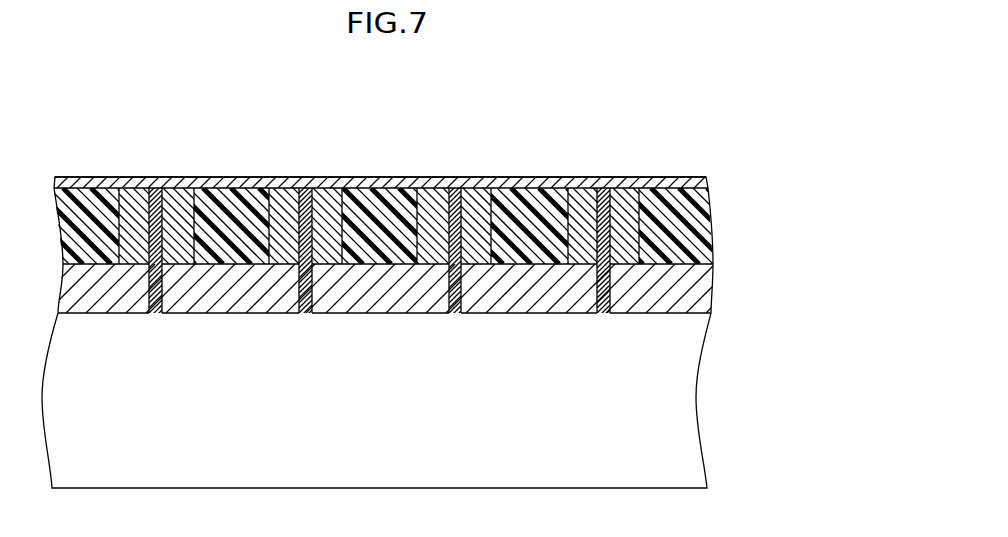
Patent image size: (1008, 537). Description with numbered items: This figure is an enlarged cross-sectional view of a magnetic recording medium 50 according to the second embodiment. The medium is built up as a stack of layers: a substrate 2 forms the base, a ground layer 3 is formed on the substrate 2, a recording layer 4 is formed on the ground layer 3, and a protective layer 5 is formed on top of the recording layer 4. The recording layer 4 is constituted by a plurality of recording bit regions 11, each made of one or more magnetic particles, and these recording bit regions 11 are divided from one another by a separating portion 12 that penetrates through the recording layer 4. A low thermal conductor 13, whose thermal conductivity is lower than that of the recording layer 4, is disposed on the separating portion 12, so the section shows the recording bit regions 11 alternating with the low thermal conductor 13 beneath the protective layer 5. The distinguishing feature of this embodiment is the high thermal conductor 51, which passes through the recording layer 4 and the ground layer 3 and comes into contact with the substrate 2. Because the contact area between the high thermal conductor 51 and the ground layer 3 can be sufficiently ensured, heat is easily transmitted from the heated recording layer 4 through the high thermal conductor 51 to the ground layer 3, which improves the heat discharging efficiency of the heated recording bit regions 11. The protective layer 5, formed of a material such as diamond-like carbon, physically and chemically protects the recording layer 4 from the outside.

The magnetic recording medium 50 is at (808, 153).
The substrate 2 is at (688, 398).
The ground layer 3 is at (708, 284).
The protective layer 5 is at (680, 183).
The recording bit region 11 is at (330, 192).
The recording layer 4 is at (376, 185).
The low thermal conductor 13 is at (705, 224).
The separating portion 12 is at (423, 226).
The high thermal conductor 51 is at (301, 192).